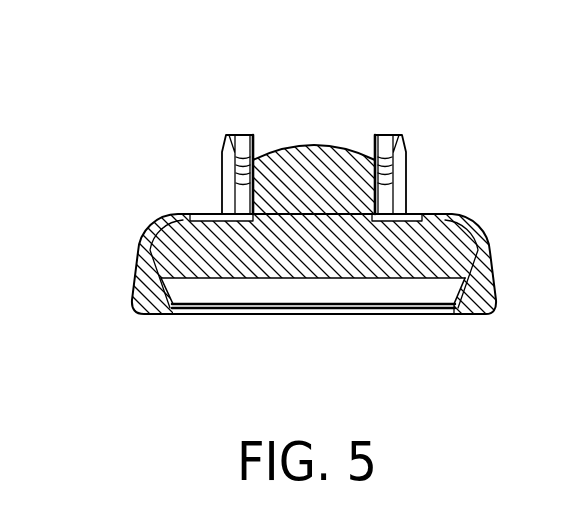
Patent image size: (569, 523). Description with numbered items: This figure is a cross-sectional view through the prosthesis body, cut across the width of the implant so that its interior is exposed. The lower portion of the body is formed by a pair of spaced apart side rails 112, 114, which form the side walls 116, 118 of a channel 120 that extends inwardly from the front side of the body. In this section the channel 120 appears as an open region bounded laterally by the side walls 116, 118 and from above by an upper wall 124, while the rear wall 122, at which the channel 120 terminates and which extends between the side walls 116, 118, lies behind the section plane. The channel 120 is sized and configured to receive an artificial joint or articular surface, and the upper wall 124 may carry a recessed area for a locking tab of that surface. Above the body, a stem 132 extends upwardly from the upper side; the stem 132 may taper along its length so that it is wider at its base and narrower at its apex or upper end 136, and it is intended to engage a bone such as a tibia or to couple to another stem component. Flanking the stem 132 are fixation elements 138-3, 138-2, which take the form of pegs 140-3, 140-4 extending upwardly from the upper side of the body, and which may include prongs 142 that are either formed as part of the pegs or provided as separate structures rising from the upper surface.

The side rail 112 is at (157, 315).
The side rail 114 is at (472, 308).
The side wall 116 is at (160, 290).
The side wall 118 is at (490, 294).
The channel 120 is at (356, 305).
The rear wall 122 is at (282, 292).
The upper wall 124 is at (212, 279).
The stem 132 is at (332, 167).
The upper end 136 is at (308, 145).
The fixation element 138-2 is at (437, 128).
The fixation element 138-3 is at (187, 128).
The peg 140-3 is at (221, 158).
The peg 140-4 is at (398, 170).
The prongs 142 is at (235, 202).